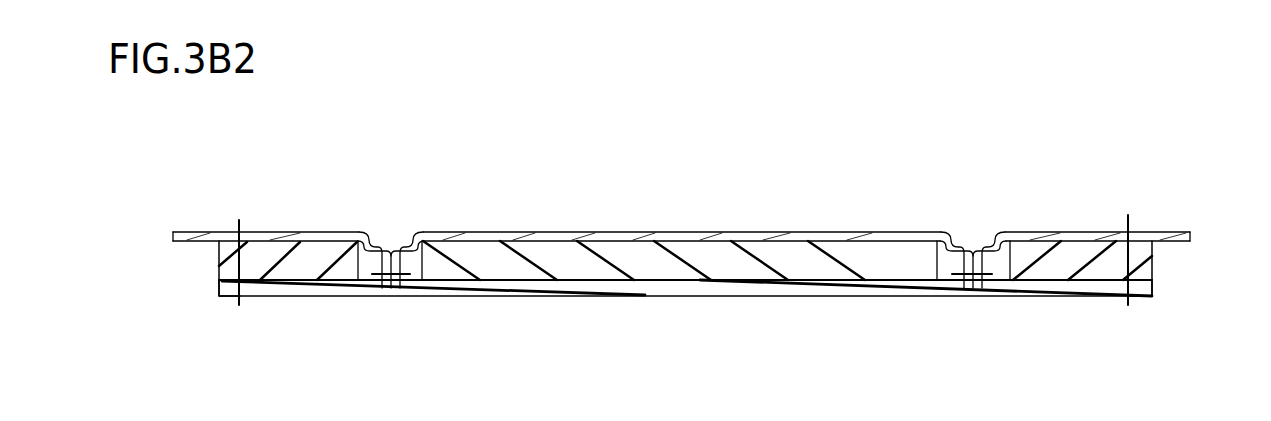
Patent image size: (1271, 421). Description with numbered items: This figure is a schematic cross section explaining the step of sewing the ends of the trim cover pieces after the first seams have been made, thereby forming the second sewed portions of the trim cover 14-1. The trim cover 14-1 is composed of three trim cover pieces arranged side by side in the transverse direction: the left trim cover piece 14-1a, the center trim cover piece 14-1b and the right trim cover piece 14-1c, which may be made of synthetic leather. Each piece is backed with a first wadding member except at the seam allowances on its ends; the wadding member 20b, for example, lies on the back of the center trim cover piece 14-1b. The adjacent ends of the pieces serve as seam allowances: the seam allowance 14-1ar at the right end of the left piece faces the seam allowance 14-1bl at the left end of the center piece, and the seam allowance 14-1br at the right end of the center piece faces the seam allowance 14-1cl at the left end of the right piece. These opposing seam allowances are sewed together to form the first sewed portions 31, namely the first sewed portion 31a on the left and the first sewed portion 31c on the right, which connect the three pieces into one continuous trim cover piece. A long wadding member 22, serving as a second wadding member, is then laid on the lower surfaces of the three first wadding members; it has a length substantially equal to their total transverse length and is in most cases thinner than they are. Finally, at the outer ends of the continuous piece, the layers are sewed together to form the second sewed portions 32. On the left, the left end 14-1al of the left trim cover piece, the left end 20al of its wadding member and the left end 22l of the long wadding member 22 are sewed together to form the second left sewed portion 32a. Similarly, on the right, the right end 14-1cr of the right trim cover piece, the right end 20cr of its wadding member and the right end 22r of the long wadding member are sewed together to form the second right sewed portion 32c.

The trim cover 14-1 is at (717, 137).
The left trim cover piece 14-1a is at (338, 232).
The left end of the left trim cover piece 14-1al is at (212, 232).
The seam allowance 14-1ar is at (375, 247).
The center trim cover piece 14-1b is at (535, 232).
The seam allowance 14-1bl is at (406, 250).
The seam allowance 14-1br is at (960, 247).
The right trim cover piece 14-1c is at (1032, 232).
The seam allowance 14-1cl is at (986, 248).
The right end of the right trim cover piece 14-1cr is at (1165, 232).
The left end of the wadding member 20al is at (217, 252).
The wadding member 20b is at (532, 283).
The right end of the wadding member 20cr is at (1135, 252).
The long wadding member 22 is at (697, 287).
The left end of the long wadding member 22l is at (222, 297).
The right end of the long wadding member 22r is at (1147, 296).
The first sewed portions 31 is at (682, 312).
The first sewed portion 31a is at (392, 295).
The first sewed portion 31c is at (957, 293).
The second sewed portions 32 is at (684, 282).
The second left sewed portion 32a is at (239, 308).
The second right sewed portion 32c is at (1134, 318).